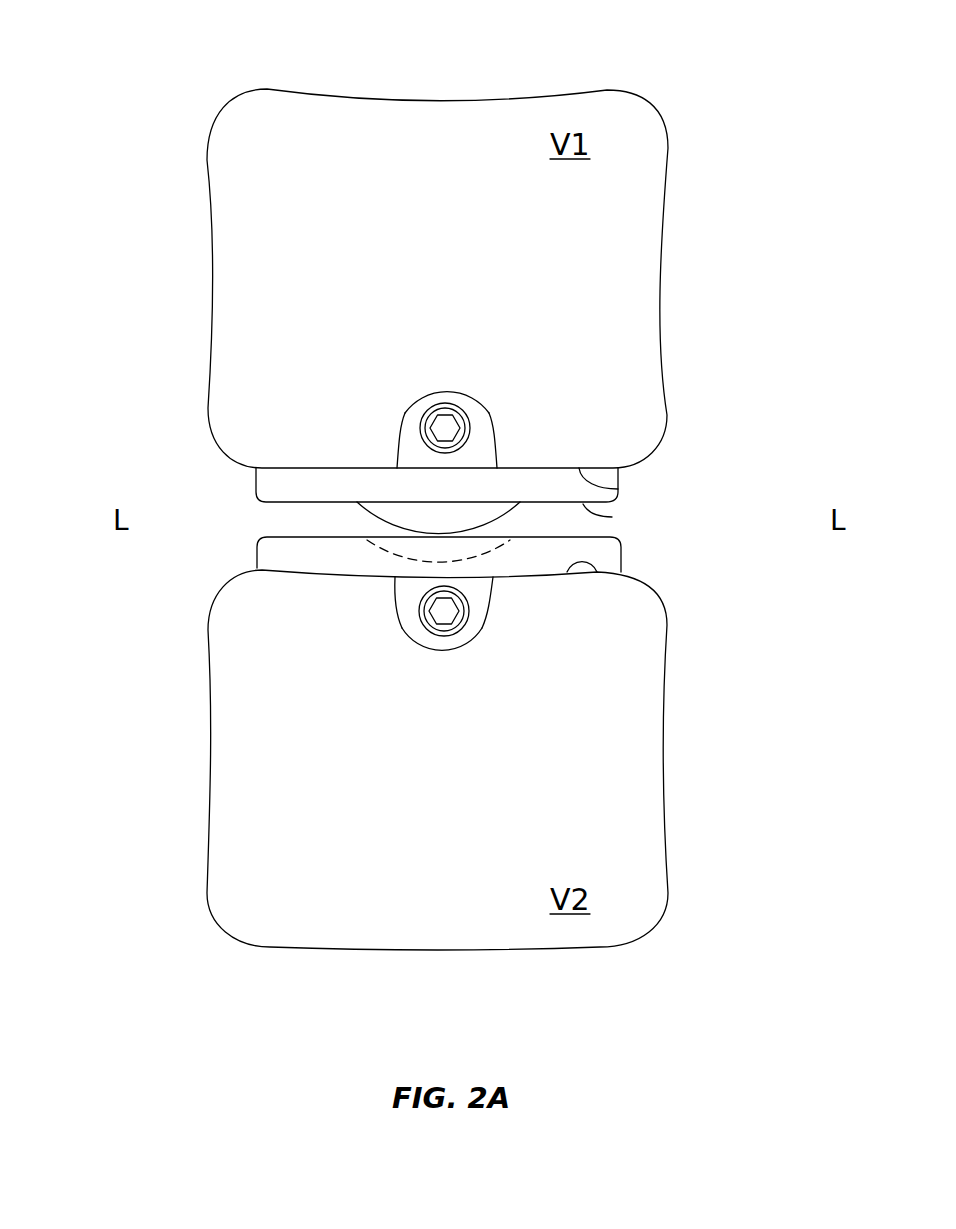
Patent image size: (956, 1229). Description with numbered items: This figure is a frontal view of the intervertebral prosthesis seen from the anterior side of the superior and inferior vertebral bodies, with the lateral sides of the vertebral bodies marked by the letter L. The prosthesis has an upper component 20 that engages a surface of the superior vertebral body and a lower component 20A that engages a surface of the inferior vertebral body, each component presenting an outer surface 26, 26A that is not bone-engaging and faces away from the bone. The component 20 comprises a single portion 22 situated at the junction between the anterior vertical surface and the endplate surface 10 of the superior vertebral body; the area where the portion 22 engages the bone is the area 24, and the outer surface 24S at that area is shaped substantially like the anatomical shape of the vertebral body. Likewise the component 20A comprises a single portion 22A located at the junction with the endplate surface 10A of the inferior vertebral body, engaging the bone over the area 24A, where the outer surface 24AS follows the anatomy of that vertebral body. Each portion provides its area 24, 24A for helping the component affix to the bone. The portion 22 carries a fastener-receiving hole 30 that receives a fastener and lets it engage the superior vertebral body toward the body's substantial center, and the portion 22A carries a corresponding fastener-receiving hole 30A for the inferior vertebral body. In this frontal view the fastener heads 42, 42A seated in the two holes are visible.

The endplate surface 10 is at (620, 488).
The endplate surface 10A is at (595, 573).
The component 20 is at (640, 467).
The component 20A is at (657, 557).
The portion 22 is at (478, 406).
The portion 22A is at (467, 635).
The area 24 is at (420, 383).
The outer surface 24S is at (444, 383).
The area 24A is at (420, 657).
The outer surface 24AS is at (447, 663).
The outer surface 26 is at (612, 517).
The outer surface 26A is at (583, 535).
The fastener-receiving hole 30 is at (420, 420).
The fastener-receiving hole 30A is at (420, 632).
The fastener head 42 is at (435, 429).
The fastener head 42A is at (438, 610).